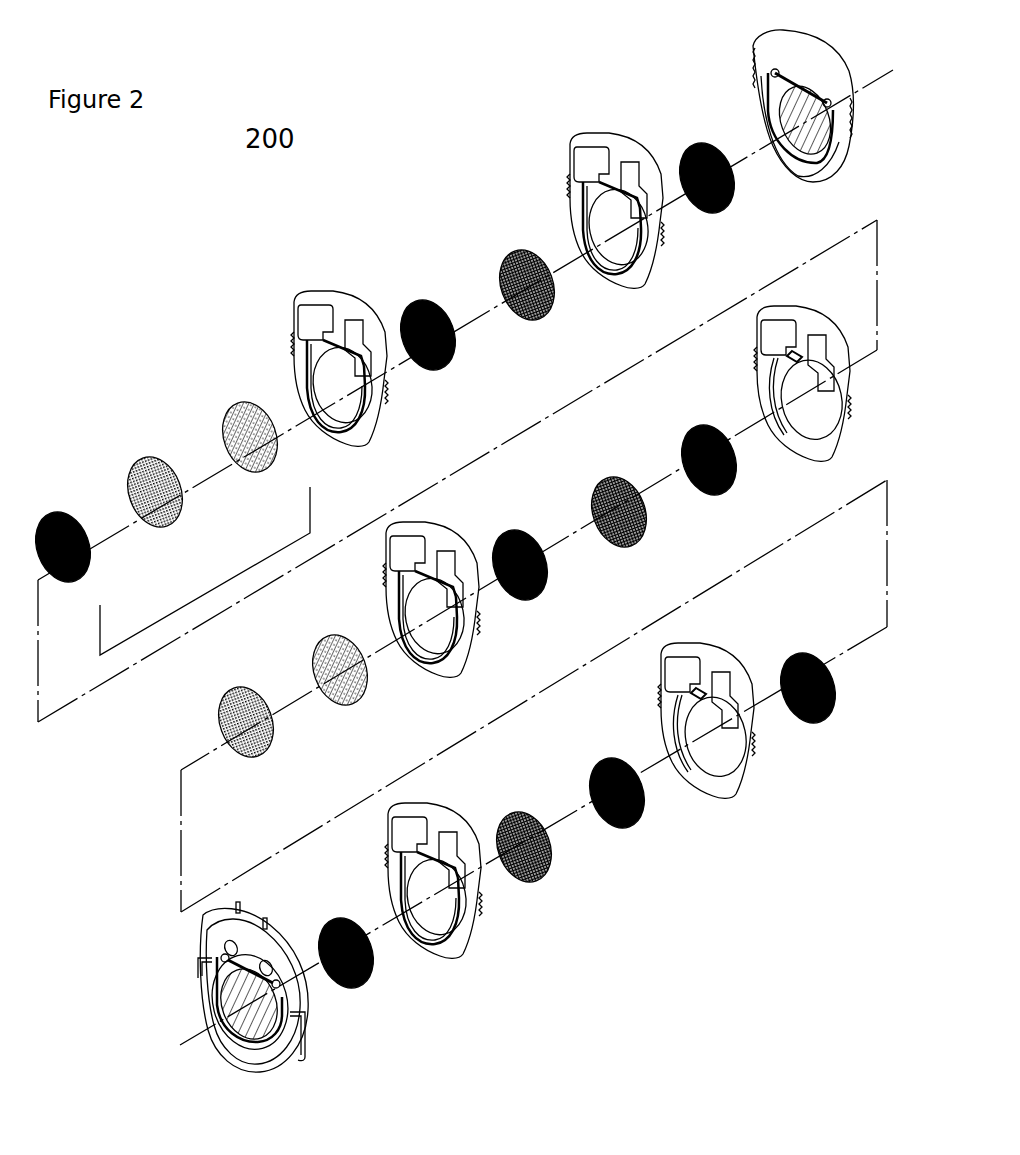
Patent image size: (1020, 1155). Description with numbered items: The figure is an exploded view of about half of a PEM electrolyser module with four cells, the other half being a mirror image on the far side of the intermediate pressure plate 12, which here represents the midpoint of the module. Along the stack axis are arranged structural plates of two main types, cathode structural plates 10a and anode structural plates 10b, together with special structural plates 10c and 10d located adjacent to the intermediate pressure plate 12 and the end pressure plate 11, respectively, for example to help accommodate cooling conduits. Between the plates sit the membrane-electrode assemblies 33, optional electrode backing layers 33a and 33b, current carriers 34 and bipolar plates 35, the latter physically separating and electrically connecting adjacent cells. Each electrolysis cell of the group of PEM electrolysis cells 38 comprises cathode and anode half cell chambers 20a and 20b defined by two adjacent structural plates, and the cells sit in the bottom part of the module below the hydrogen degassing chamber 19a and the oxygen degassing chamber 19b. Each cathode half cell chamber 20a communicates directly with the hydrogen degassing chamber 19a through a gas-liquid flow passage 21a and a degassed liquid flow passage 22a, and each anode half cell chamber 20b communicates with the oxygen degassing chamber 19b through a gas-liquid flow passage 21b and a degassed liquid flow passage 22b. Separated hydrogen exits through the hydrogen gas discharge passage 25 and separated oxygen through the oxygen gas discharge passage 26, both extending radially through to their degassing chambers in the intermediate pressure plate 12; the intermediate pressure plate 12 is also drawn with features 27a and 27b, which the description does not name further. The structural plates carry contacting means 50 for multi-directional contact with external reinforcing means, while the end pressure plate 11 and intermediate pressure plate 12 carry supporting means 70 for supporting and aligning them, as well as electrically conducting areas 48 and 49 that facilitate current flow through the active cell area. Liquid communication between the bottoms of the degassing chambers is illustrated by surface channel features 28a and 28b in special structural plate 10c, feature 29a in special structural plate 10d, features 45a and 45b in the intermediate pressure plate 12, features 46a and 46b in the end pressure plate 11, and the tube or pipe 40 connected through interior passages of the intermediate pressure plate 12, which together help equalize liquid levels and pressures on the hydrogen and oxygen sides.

The cathode structural plate 10a is at (822, 450).
The anode structural plate 10b is at (330, 423).
The special structural plate 10c is at (457, 952).
The special structural plate 10d is at (648, 280).
The end pressure plate 11 is at (827, 180).
The intermediate pressure plate 12 is at (238, 1047).
The hydrogen degassing chamber 19a is at (320, 322).
The oxygen degassing chamber 19b is at (365, 345).
The cathode half cell chamber 20a is at (818, 417).
The anode half cell chamber 20b is at (352, 403).
The gas-liquid flow passage 21a is at (798, 353).
The gas-liquid flow passage 21b is at (347, 343).
The degassed liquid flow passage 22a is at (770, 405).
The degassed liquid flow passage 22b is at (378, 412).
The hydrogen gas discharge passage 25 is at (266, 918).
The oxygen gas discharge passage 26 is at (240, 902).
The pad 27a is at (226, 945).
The pad 27b is at (270, 962).
The liquid communication passage feature 28a is at (408, 885).
The liquid communication passage feature 28b is at (590, 237).
The liquid communication passage feature 29a is at (607, 178).
The membrane-electrode assembly 33 is at (175, 525).
The electrode backing layer 33a is at (80, 575).
The electrode backing layer 33b is at (265, 470).
The current carrier 34 is at (448, 358).
The bipolar plate 35 is at (545, 315).
The PEM electrolysis cells 38 is at (205, 571).
The tube or pipe 40 is at (217, 1017).
The liquid communication passage feature 45a is at (218, 978).
The liquid communication passage feature 45b is at (280, 1040).
The liquid communication passage feature 46a is at (810, 97).
The liquid communication passage feature 46b is at (835, 108).
The electrically conducting area 48 is at (795, 113).
The electrically conducting area 49 is at (277, 1028).
The contacting means 50 is at (302, 370).
The supporting means 70 is at (755, 45).